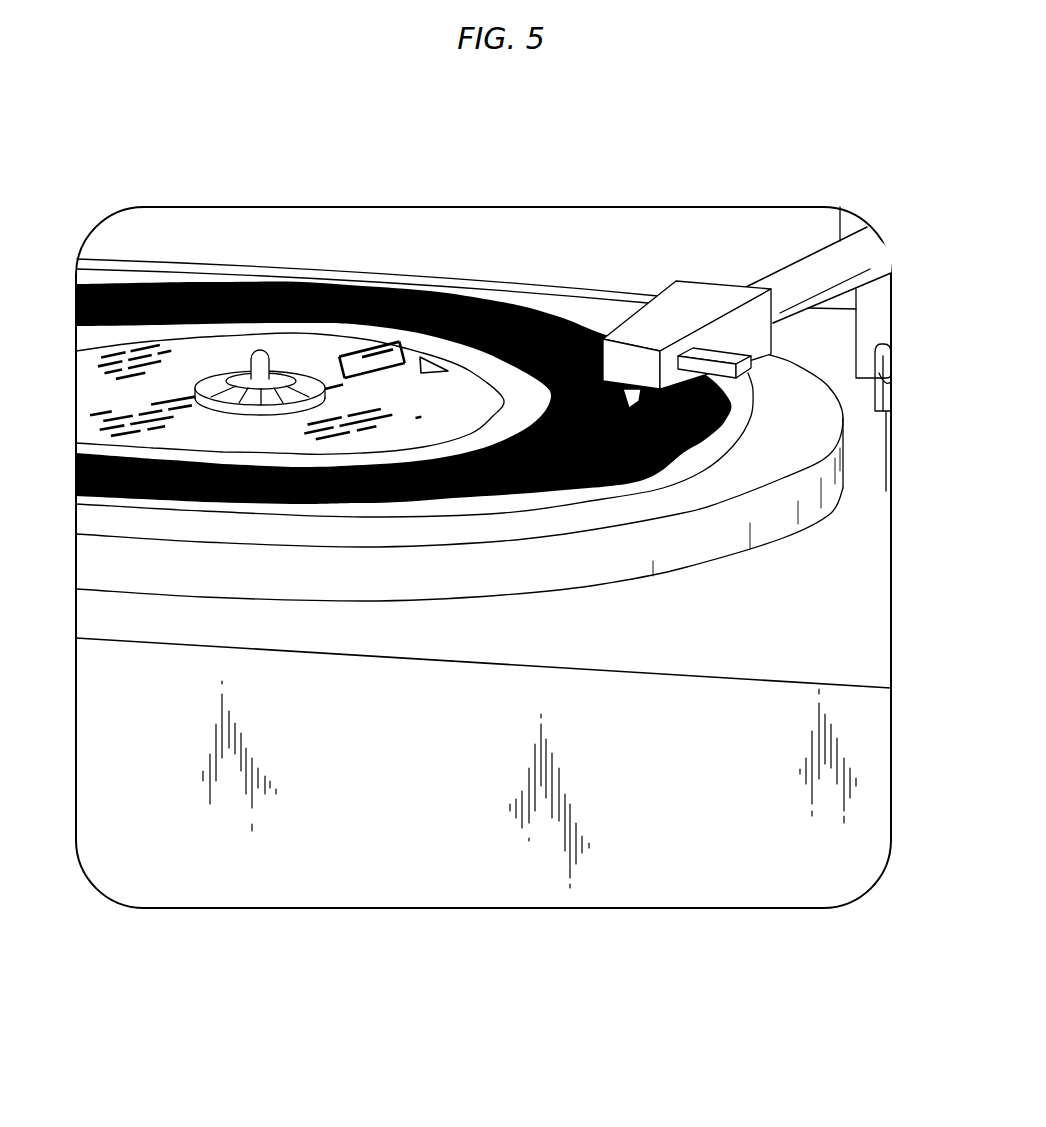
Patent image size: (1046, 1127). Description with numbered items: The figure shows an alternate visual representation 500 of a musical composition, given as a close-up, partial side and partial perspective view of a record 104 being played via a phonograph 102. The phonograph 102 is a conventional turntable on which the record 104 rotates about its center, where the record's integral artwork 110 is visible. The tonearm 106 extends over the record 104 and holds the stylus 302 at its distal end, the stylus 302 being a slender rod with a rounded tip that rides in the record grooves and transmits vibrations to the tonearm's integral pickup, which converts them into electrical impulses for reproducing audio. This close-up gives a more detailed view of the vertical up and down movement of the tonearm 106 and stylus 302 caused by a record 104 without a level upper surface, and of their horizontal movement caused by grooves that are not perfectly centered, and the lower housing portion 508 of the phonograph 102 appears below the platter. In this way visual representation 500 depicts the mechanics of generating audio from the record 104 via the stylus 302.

The visual representation 500 is at (855, 175).
The phonograph 102 is at (318, 835).
The record 104 is at (503, 372).
The tonearm 106 is at (795, 275).
The integral artwork 110 is at (239, 347).
The stylus 302 is at (630, 402).
The bottom surface of housing 508 is at (567, 907).